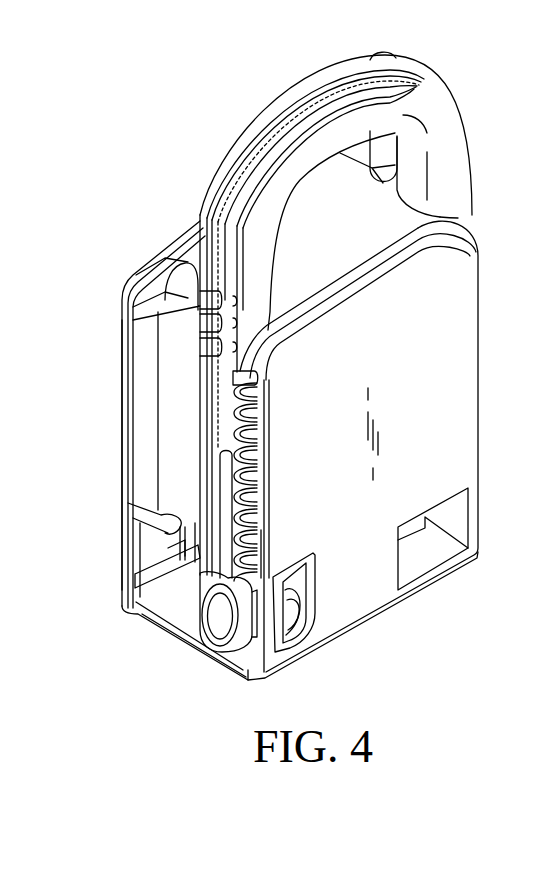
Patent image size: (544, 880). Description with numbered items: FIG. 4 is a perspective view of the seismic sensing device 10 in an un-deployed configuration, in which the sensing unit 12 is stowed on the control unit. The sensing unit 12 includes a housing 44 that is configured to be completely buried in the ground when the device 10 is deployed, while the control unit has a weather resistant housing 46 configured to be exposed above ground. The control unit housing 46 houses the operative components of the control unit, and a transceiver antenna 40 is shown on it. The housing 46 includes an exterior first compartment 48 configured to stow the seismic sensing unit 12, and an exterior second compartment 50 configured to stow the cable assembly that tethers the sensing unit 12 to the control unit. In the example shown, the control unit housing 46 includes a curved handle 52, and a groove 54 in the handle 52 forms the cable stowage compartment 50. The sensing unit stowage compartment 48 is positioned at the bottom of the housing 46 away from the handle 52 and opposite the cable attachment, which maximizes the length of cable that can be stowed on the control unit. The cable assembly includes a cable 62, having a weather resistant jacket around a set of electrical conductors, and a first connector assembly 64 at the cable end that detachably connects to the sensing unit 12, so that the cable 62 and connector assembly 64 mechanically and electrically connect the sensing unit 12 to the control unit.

The seismic sensing device 10 is at (176, 110).
The sensing unit 12 is at (288, 666).
The transceiver antenna 40 is at (372, 56).
The housing 44 is at (293, 598).
The weather resistant housing 46 is at (470, 319).
The exterior first compartment 48 is at (304, 583).
The exterior second compartment 50 is at (403, 71).
The curved handle 52 is at (443, 123).
The groove 54 is at (328, 107).
The cable 62 is at (303, 130).
The first connector assembly 64 is at (197, 632).